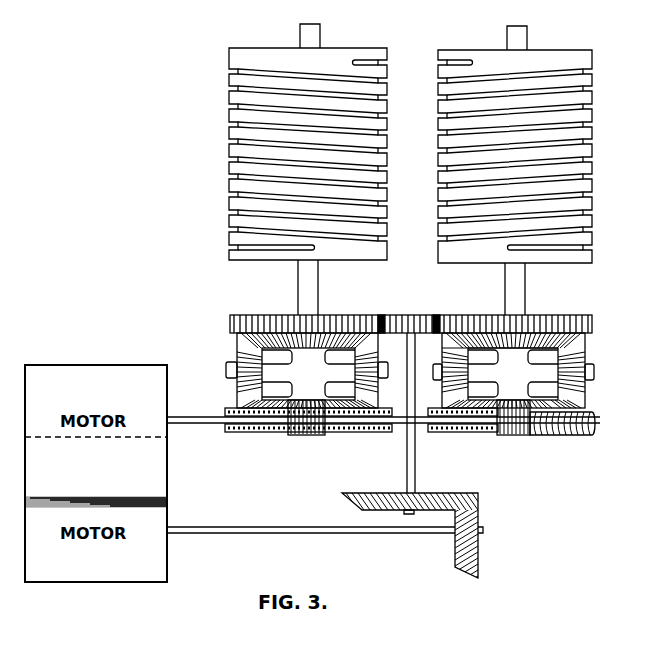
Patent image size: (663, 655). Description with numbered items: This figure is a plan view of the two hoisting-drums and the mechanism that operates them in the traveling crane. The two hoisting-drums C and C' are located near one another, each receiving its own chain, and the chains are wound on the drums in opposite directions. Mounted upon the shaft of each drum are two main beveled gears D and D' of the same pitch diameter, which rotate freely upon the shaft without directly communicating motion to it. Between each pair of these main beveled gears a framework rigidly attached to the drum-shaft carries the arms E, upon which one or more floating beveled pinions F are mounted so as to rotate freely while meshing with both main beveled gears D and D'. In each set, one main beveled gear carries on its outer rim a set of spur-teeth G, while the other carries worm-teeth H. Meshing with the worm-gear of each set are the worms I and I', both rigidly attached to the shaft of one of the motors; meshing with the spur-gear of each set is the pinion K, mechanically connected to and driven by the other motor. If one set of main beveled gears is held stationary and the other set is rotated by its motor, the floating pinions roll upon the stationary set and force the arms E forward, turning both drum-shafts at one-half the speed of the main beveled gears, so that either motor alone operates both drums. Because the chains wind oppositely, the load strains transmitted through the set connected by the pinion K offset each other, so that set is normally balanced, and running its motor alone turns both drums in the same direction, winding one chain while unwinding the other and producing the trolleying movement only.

The hoisting-drum C' is at (317, 169).
The hoisting-drum C is at (524, 170).
The spur-teeth G is at (245, 310).
The pinion K is at (413, 395).
The beveled gear D is at (411, 375).
The beveled gear D' is at (531, 356).
The beveled pinion F is at (226, 361).
The arms E is at (410, 373).
The worm-teeth H is at (275, 438).
The worm I' is at (313, 428).
The worm I is at (515, 430).